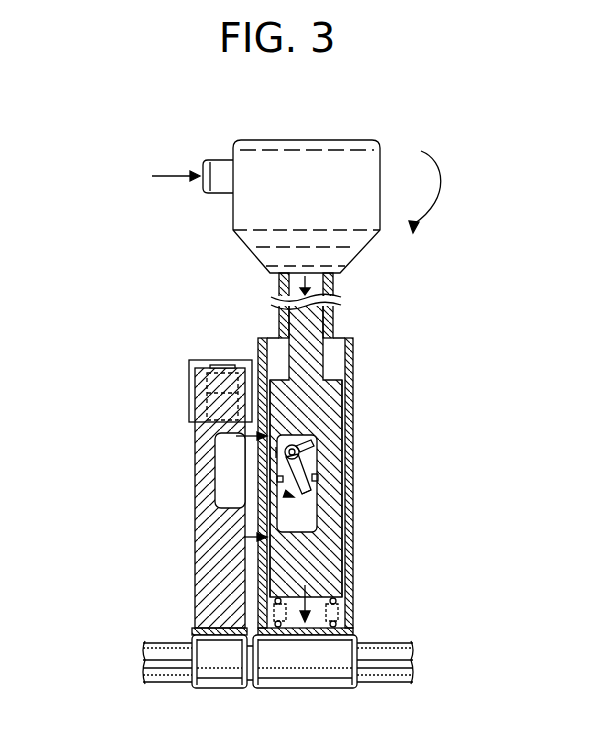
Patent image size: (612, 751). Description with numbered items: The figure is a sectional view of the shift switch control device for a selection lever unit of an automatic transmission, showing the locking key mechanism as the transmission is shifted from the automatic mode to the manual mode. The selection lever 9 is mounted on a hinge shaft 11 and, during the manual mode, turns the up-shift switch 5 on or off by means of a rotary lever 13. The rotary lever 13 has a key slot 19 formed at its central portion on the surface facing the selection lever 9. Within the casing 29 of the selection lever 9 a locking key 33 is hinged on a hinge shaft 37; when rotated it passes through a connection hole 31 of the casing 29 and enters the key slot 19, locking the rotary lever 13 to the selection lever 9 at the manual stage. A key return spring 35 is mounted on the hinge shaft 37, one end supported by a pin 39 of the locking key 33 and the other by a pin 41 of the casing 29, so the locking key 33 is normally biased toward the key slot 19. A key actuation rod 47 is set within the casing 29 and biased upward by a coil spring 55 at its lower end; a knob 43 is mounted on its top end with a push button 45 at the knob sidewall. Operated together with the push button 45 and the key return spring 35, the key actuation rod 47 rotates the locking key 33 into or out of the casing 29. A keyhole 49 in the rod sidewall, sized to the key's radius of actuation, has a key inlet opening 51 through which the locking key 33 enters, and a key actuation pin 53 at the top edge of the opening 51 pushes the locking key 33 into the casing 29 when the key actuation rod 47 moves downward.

The up-shift switch 5 is at (204, 360).
The selection lever 9 is at (371, 305).
The hinge shaft 11 is at (391, 681).
The rotary lever 13 is at (201, 437).
The key slot 19 is at (226, 484).
The casing 29 is at (355, 482).
The connection hole 31 is at (236, 436).
The locking key 33 is at (320, 503).
The key return spring 35 is at (320, 447).
The hinge shaft 37 is at (300, 441).
The pin 39 is at (285, 492).
The pin 41 is at (318, 477).
The knob 43 is at (380, 150).
The push button 45 is at (221, 194).
The key actuation rod 47 is at (318, 393).
The keyhole 49 is at (325, 527).
The key inlet opening 51 is at (244, 537).
The key actuation pin 53 is at (272, 452).
The coil spring 55 is at (343, 597).